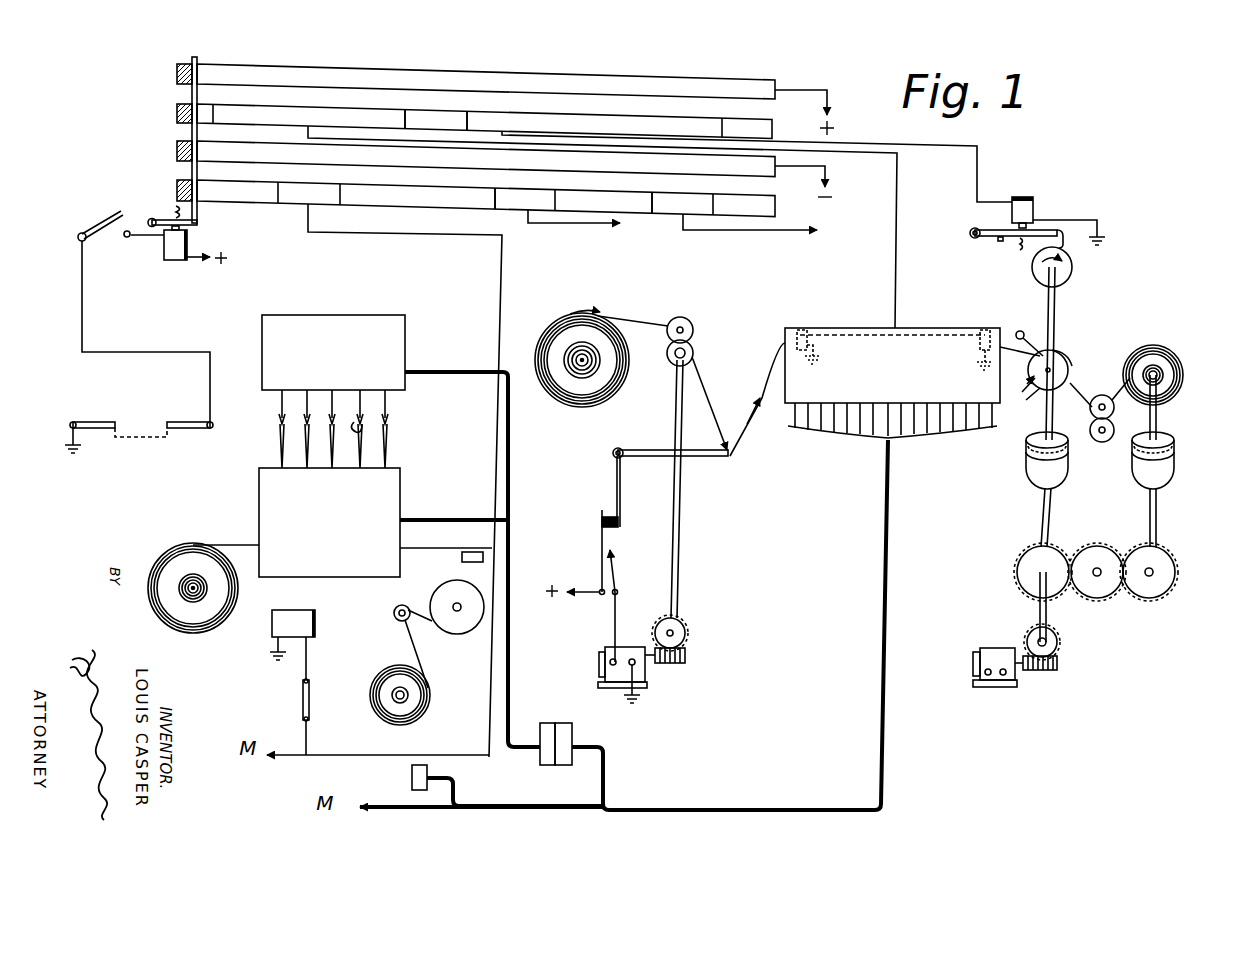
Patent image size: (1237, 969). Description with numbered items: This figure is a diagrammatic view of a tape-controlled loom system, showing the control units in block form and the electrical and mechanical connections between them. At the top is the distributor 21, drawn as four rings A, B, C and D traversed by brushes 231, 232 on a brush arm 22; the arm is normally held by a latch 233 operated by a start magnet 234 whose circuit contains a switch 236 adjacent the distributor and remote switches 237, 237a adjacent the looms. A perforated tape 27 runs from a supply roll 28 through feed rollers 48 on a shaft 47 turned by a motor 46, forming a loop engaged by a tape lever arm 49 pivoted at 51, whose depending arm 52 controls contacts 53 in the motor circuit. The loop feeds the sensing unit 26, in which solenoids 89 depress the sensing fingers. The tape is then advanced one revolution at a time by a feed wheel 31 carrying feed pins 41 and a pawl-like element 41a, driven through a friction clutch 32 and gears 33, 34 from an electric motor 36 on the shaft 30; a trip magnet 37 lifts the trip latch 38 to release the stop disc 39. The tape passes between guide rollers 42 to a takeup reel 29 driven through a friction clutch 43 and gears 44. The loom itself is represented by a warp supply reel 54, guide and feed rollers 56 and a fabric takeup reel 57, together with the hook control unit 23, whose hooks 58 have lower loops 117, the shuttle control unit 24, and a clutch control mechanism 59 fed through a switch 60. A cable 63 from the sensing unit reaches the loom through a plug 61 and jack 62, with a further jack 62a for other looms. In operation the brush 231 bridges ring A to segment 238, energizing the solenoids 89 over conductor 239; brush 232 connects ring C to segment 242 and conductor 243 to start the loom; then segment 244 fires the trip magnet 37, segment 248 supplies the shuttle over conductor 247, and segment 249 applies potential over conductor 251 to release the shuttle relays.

The distributor 21 is at (443, 69).
The brush arm 22 is at (199, 63).
The hook control unit 23 is at (332, 324).
The shuttle control unit 24 is at (262, 486).
The sensing unit 26 is at (912, 328).
The tape 27 is at (640, 325).
The supply roll 28 is at (592, 406).
The takeup reel 29 is at (1170, 358).
The motor driven shaft 30 is at (1042, 514).
The feed wheel 31 is at (1068, 360).
The friction clutch 32 is at (1028, 458).
The gear 33 is at (1058, 641).
The gear 34 is at (1042, 670).
The electric motor 36 is at (988, 663).
The trip magnet 37 is at (1036, 212).
The trip latch 38 is at (985, 240).
The stop disc 39 is at (1074, 270).
The feed pins 41 is at (1030, 390).
The pawl arm 41a is at (1056, 348).
The guide rollers 42 is at (1090, 422).
The friction clutch 43 is at (1168, 470).
The gears 44 is at (1140, 582).
The motor 46 is at (630, 640).
The shaft 47 is at (680, 530).
The feed rollers 48 is at (695, 348).
The tape lever arm 49 is at (648, 448).
The pivot 51 is at (618, 448).
The depending arm 52 is at (617, 488).
The contacts 53 is at (620, 580).
The warp supply reel 54 is at (165, 545).
The guide and feed rollers 56 is at (440, 598).
The takeup reel 57 is at (428, 698).
The hooks 58 is at (386, 403).
The clutch control mechanism 59 is at (298, 620).
The switch 60 is at (302, 703).
The multiple conductor plug 61 is at (548, 723).
The jack 62 is at (568, 724).
The jack 62a is at (412, 775).
The cable 63 is at (732, 810).
The solenoids 89 is at (985, 330).
The loop 117 is at (368, 430).
The brush 231 is at (176, 82).
The brush 232 is at (176, 155).
The latch 233 is at (200, 223).
The start magnet 234 is at (166, 263).
The switch 236 is at (92, 220).
The switch 237 is at (182, 420).
The switch 237a is at (98, 420).
The segment 238 is at (305, 113).
The conductor 239 is at (896, 213).
The segment 242 is at (300, 208).
The conductor 243 is at (502, 328).
The segment 244 is at (505, 125).
The conductor 247 is at (592, 223).
The segment 248 is at (526, 205).
The segment 249 is at (675, 206).
The conductor 251 is at (758, 230).